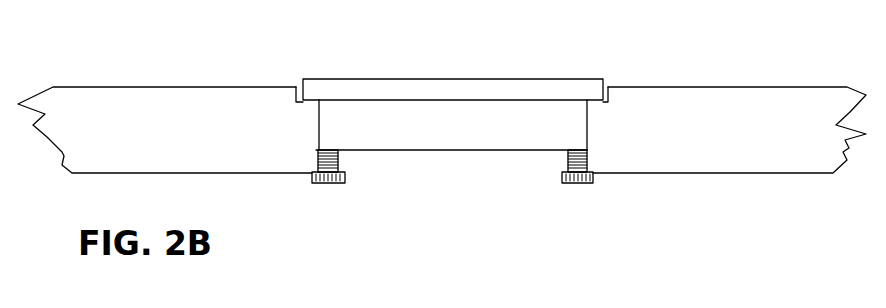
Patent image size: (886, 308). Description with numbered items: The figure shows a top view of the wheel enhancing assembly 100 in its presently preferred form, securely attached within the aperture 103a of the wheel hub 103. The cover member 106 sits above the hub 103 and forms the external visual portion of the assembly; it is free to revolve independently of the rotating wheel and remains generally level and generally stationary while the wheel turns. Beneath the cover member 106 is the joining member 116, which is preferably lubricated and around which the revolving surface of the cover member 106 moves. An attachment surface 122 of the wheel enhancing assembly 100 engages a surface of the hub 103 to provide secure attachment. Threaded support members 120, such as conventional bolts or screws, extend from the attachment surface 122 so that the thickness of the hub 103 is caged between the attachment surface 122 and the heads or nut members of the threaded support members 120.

The wheel enhancing assembly 100 is at (524, 51).
The hub 103 is at (740, 100).
The aperture 103a is at (540, 160).
The cover member 106 is at (397, 79).
The joining member 116 is at (437, 130).
The threaded support members 120 is at (333, 184).
The attachment surface 122 is at (490, 150).